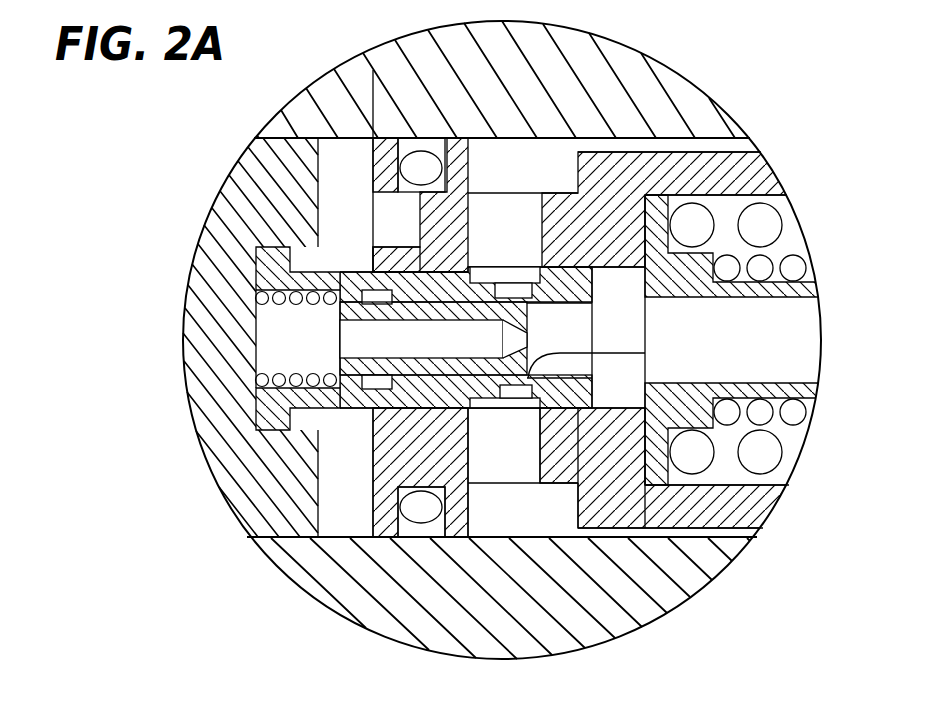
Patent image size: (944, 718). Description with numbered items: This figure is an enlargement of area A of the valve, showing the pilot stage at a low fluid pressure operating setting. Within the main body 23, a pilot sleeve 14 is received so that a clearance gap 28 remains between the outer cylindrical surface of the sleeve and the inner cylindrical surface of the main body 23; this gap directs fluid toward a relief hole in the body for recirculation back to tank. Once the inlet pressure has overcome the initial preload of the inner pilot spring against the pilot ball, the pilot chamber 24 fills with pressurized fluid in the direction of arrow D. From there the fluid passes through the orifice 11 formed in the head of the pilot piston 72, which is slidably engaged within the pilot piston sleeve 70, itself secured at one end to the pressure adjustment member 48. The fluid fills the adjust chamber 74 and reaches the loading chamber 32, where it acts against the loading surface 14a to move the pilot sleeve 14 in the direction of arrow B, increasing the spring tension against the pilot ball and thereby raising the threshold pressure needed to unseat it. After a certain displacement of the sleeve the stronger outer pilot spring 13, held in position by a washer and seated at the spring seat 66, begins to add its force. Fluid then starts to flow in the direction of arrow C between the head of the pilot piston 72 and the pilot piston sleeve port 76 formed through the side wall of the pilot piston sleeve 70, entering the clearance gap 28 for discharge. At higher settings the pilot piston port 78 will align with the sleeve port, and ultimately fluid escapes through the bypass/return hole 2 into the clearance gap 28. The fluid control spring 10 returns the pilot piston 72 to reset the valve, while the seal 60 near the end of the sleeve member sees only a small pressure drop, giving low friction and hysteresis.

The bypass/return hole 2 is at (484, 468).
The fluid control spring 10 is at (250, 378).
The orifice 11 is at (527, 337).
The outer pilot spring 13 is at (756, 466).
The pilot sleeve 14 is at (748, 178).
The loading surface 14a is at (318, 150).
The main body 23 is at (624, 76).
The pilot chamber 24 is at (774, 332).
The clearance gap 28 is at (727, 533).
The loading chamber 32 is at (334, 192).
The pressure adjustment member 48 is at (220, 276).
The seal 60 is at (425, 508).
The spring seat 66 is at (812, 393).
The pilot piston sleeve 70 is at (405, 410).
The pilot piston 72 is at (337, 308).
The adjust chamber 74 is at (302, 344).
The pilot piston sleeve port 76 is at (500, 390).
The pilot piston port 78 is at (455, 300).
The area A is at (708, 92).
The arrow B is at (430, 92).
The arrow C is at (522, 400).
The arrow D is at (633, 340).